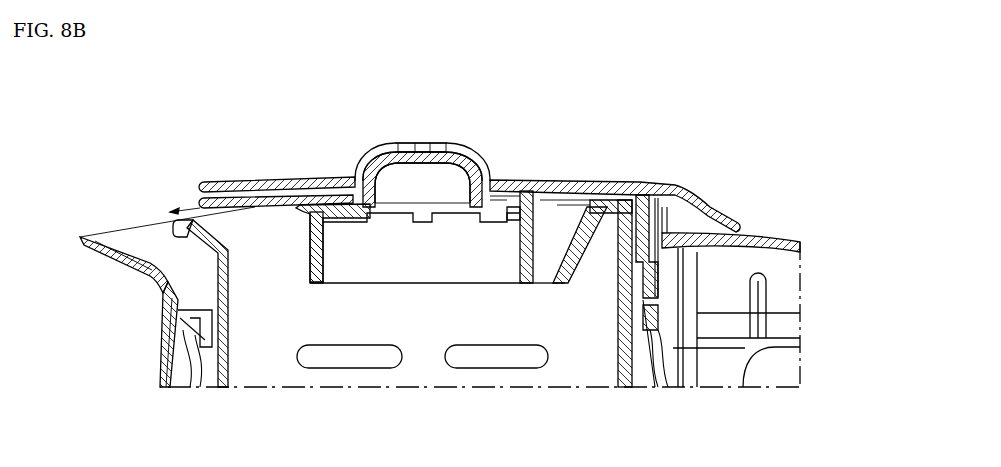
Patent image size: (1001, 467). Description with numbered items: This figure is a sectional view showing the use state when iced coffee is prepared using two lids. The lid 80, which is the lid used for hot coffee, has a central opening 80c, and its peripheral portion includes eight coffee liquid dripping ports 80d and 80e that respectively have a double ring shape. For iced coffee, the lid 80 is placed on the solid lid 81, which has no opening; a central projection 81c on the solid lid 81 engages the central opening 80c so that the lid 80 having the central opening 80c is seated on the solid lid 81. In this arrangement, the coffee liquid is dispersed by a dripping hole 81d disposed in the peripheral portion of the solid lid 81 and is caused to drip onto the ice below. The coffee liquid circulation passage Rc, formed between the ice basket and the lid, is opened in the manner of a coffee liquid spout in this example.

The lid 80 is at (553, 181).
The central opening 80c is at (420, 143).
The coffee liquid dripping port 80d is at (372, 150).
The coffee liquid dripping port 80e is at (332, 180).
The solid lid 81 is at (612, 198).
The central projection 81c is at (414, 158).
The dripping hole 81d is at (512, 219).
The coffee liquid circulation passage Rc is at (212, 209).